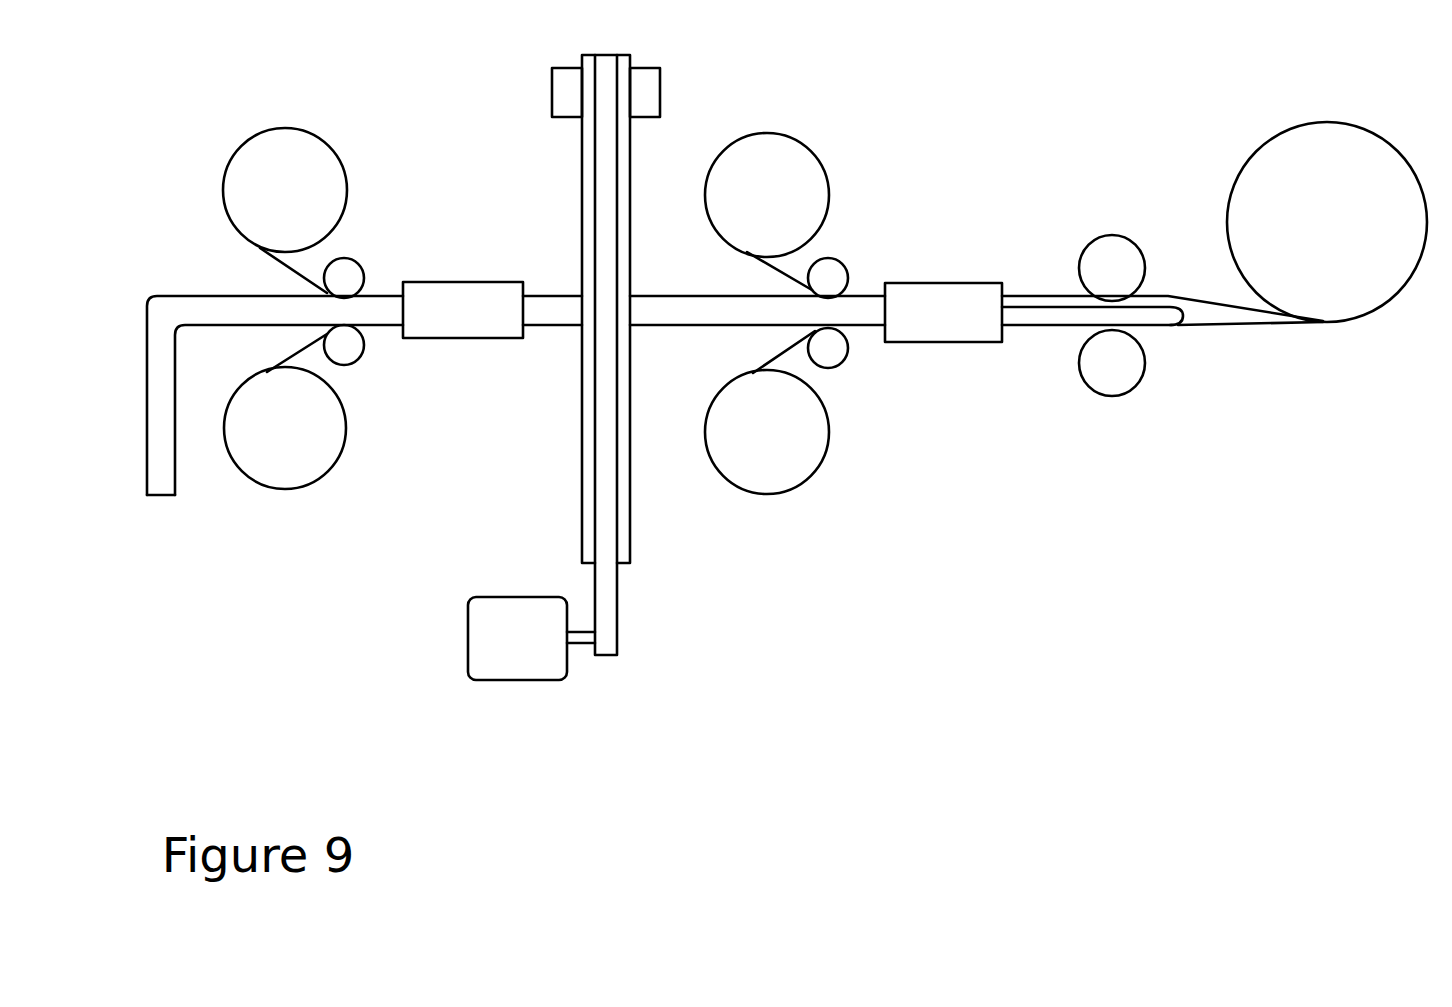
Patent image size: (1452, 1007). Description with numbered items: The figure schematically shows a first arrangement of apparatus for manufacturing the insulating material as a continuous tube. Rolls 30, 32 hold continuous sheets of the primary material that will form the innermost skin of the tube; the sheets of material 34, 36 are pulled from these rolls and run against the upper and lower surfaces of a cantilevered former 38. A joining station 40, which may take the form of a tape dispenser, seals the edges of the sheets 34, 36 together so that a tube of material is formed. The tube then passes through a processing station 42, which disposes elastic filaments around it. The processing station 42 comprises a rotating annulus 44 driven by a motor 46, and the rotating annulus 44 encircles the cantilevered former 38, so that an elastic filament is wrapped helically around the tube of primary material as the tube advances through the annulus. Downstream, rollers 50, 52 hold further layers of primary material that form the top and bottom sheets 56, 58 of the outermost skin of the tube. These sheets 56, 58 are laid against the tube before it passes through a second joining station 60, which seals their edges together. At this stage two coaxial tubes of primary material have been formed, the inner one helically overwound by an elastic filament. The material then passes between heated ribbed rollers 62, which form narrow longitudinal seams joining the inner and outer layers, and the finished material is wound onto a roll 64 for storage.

The roll 30 is at (303, 130).
The roll 32 is at (297, 498).
The sheet of material 34 is at (313, 270).
The sheet of material 36 is at (314, 348).
The cantilevered former 38 is at (190, 308).
The joining station 40 is at (463, 294).
The processing station 42 is at (606, 281).
The rotating annulus 44 is at (632, 533).
The motor 46 is at (468, 624).
The roller 50 is at (797, 142).
The roller 52 is at (812, 480).
The top sheet 56 is at (790, 270).
The bottom sheet 58 is at (792, 350).
The second joining station 60 is at (943, 297).
The heated ribbed rollers 62 is at (1120, 240).
The roll 64 is at (1327, 222).